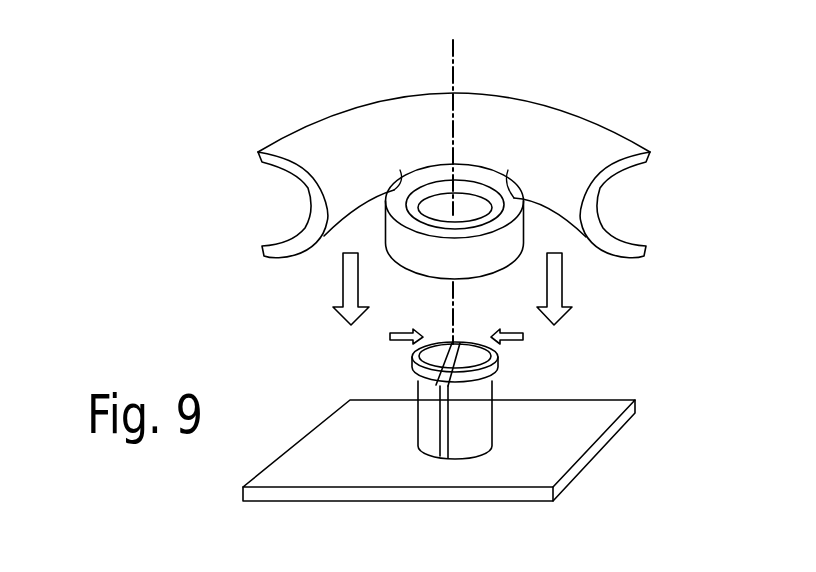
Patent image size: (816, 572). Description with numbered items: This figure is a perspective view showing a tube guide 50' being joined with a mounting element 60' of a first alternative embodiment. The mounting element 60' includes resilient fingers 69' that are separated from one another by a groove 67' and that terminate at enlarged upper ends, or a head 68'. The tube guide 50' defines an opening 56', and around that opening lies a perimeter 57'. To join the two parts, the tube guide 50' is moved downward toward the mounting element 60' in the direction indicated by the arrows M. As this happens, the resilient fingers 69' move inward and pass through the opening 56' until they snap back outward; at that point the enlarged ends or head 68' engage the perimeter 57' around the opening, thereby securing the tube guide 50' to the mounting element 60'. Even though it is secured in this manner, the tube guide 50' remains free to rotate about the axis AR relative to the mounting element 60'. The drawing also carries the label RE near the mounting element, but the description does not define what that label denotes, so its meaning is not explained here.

The tube guide 50' is at (467, 137).
The opening 56' is at (475, 163).
The perimeter 57' is at (420, 140).
The axis AR is at (453, 179).
The arrows M is at (555, 289).
The head 68' is at (415, 362).
The resilient fingers 69' is at (448, 409).
The groove 67' is at (412, 454).
The mounting element 60' is at (462, 450).
The receiving region RE is at (467, 469).